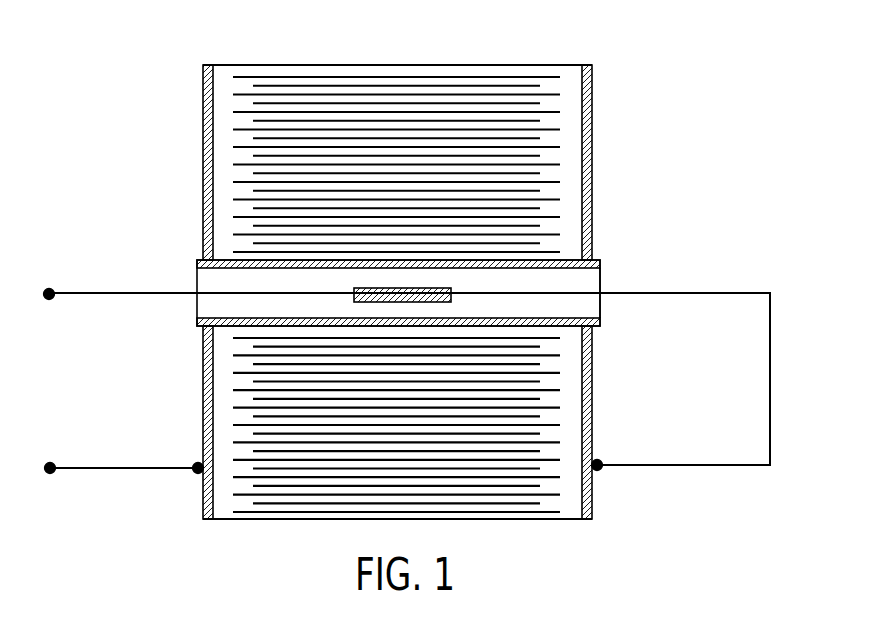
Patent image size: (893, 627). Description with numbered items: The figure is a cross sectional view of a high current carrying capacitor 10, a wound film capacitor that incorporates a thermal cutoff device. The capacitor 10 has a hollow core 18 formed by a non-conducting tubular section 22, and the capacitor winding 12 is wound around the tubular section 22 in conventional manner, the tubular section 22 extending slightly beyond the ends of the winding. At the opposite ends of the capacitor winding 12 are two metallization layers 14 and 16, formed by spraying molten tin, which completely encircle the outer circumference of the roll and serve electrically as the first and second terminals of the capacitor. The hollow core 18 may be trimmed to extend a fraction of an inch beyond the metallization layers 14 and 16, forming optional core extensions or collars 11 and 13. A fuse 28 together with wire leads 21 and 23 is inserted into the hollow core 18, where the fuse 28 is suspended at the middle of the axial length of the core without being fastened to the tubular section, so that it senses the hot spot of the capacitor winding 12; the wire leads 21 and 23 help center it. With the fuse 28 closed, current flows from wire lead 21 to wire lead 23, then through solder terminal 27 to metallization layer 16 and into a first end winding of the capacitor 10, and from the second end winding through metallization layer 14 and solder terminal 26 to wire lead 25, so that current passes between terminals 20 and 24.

The high current carrying capacitor 10 is at (88, 92).
The core extension or collar 11 is at (196, 304).
The capacitor winding 12 is at (247, 78).
The core extension or collar 13 is at (600, 304).
The metallization layer 14 is at (203, 98).
The metallization layer 16 is at (593, 93).
The hollow core 18 is at (401, 287).
The terminal 20 is at (48, 289).
The wire lead 21 is at (113, 298).
The non-conducting tubular section 22 is at (197, 263).
The wire lead 23 is at (770, 292).
The terminal 24 is at (49, 462).
The wire lead 25 is at (113, 470).
The solder terminal 26 is at (194, 471).
The solder terminal 27 is at (600, 469).
The fuse 28 is at (354, 290).